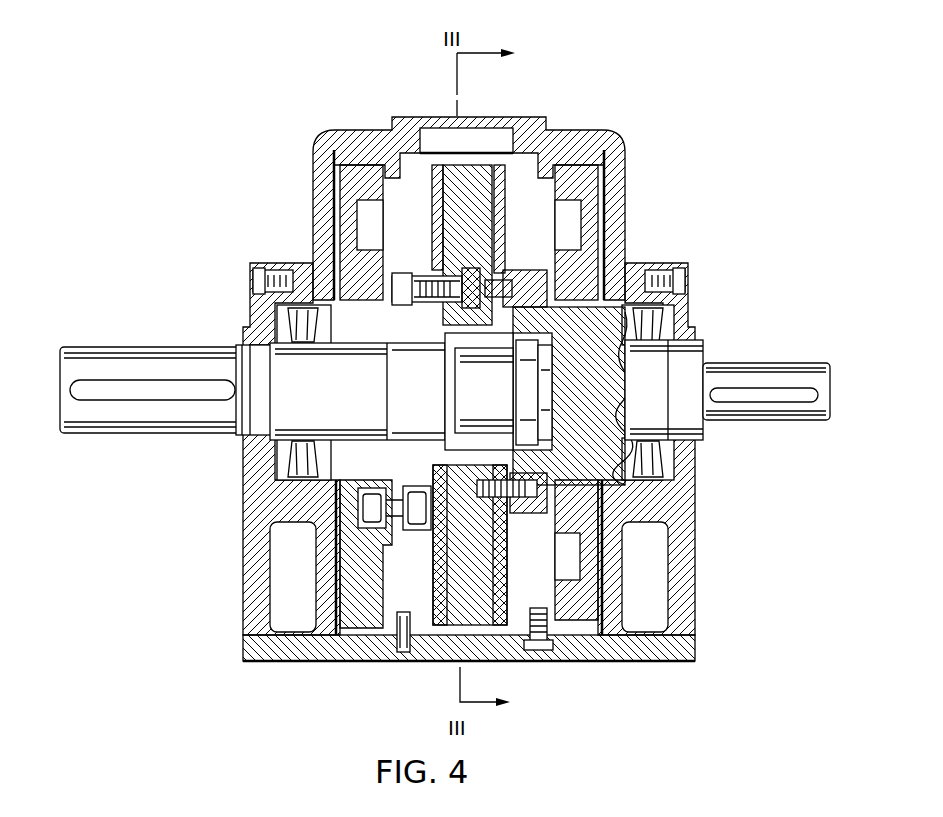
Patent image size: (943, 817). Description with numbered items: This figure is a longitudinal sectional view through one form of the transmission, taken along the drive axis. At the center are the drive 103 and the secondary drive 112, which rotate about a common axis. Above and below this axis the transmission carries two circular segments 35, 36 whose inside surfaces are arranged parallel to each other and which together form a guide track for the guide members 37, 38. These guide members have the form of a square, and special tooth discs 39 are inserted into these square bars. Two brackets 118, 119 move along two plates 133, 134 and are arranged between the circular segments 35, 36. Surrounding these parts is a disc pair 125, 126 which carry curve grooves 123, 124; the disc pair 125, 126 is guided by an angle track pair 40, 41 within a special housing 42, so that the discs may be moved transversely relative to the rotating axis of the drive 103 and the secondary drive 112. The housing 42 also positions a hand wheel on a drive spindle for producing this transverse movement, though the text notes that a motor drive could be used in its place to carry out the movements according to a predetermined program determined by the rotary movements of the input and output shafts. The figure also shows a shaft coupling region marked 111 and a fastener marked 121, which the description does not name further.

The housing 42 is at (326, 143).
The angle track 40 is at (370, 157).
The circular segment 35 is at (462, 173).
The disc 125 is at (348, 197).
The disc 126 is at (590, 181).
The plate 133 is at (438, 178).
The plate 134 is at (498, 182).
The guide member 37 is at (460, 277).
The bracket 119 is at (524, 281).
The bracket 118 is at (403, 300).
The drive 103 is at (660, 374).
The coupling hub 111 is at (520, 410).
The secondary drive 112 is at (285, 397).
The tooth disc 39 is at (473, 470).
The curve groove 123 is at (386, 522).
The bolt 121 is at (383, 520).
The guide member 38 is at (480, 507).
The curve groove 124 is at (573, 562).
The angle track 41 is at (366, 637).
The circular segment 36 is at (470, 608).